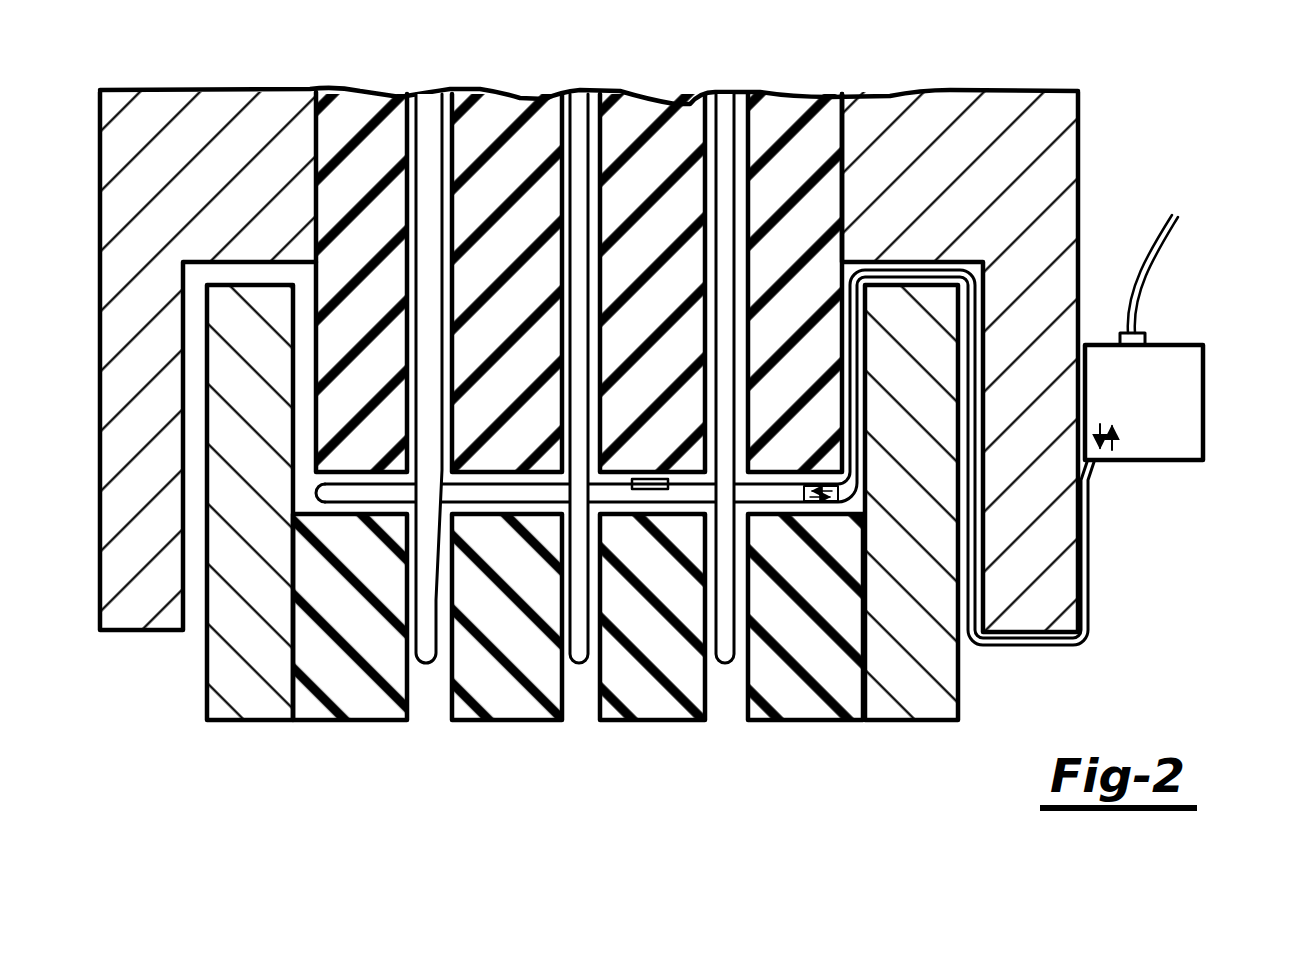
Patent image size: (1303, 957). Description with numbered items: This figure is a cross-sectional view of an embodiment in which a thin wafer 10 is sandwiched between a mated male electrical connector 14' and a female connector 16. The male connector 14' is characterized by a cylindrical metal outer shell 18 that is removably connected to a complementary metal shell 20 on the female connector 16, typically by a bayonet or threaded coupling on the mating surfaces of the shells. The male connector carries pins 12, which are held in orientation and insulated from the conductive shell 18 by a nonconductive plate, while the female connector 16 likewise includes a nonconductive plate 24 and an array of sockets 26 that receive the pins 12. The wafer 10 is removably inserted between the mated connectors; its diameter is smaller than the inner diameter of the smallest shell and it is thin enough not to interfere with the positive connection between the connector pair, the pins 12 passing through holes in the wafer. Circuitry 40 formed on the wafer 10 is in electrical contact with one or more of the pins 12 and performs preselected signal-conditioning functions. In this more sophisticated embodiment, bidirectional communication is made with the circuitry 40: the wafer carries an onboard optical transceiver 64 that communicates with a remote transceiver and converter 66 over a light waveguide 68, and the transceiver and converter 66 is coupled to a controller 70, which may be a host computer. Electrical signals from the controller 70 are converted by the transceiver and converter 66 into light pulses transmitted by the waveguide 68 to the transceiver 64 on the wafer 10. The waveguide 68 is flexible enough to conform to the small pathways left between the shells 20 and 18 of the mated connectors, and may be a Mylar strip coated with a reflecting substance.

The wafer 10 is at (358, 497).
The pins 12 is at (570, 94).
The male electrical connector 14' is at (589, 61).
The female connector 16 is at (918, 726).
The cylindrical metal outer shell 18 is at (1070, 133).
The metal shell 20 is at (215, 652).
The nonconductive plate 24 is at (800, 710).
The sockets 26 is at (556, 708).
The circuitry 40 is at (655, 492).
The optical transceiver 64 is at (845, 497).
The transceiver and converter 66 is at (1188, 393).
The light waveguide 68 is at (1095, 585).
The controller 70 is at (1195, 239).